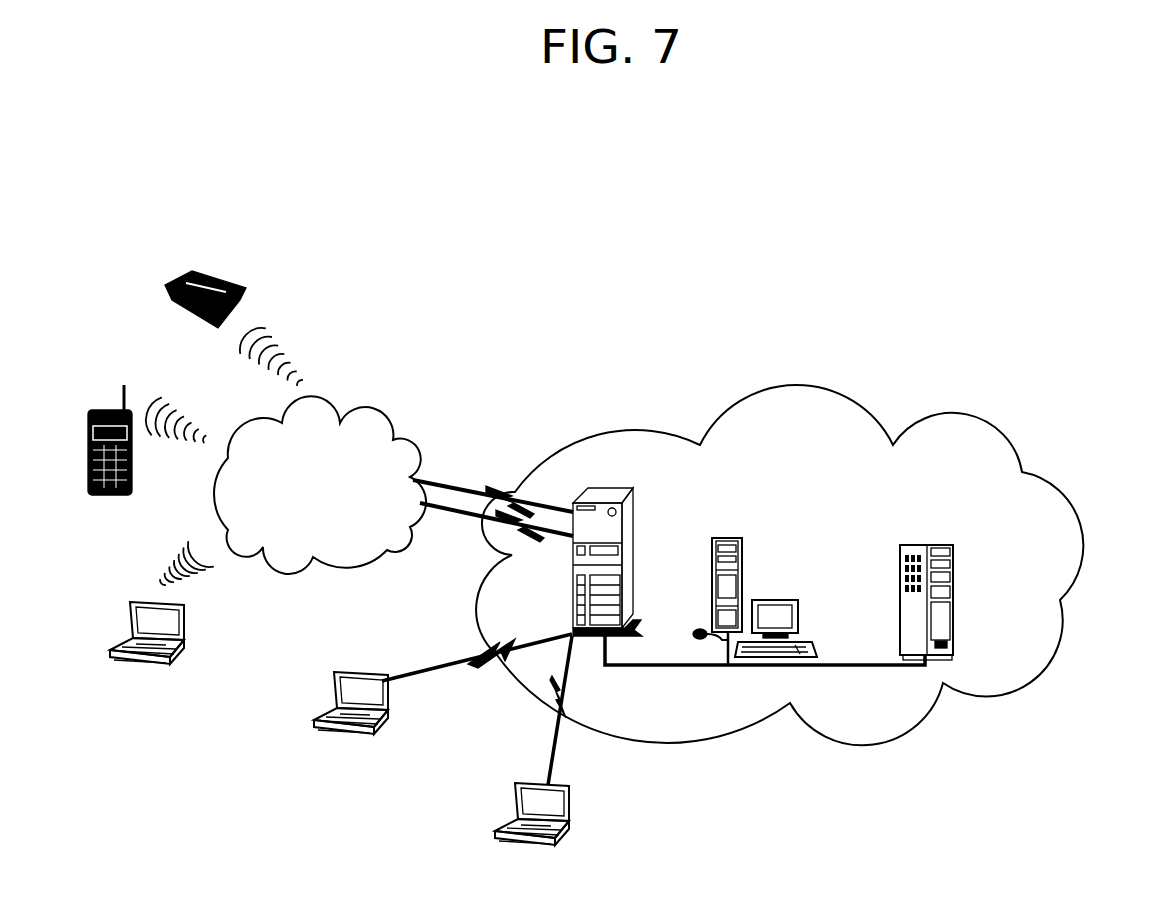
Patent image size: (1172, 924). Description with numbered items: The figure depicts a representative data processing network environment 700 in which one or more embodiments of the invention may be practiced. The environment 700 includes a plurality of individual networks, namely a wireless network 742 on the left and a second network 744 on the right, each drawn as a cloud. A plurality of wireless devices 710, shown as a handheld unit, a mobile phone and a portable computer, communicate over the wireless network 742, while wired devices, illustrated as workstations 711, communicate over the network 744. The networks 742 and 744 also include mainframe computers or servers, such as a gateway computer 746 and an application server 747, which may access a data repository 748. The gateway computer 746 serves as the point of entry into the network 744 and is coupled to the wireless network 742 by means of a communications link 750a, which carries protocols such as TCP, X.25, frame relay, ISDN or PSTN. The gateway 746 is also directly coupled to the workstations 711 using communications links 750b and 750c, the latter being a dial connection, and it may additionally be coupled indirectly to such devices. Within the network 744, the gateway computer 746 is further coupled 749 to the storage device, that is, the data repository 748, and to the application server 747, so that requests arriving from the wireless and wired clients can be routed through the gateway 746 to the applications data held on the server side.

The data processing network environment 700 is at (603, 204).
The wireless devices 710 is at (190, 506).
The workstations 711 is at (438, 784).
The wireless network 742 is at (320, 475).
The network 744 is at (779, 556).
The gateway computer 746 is at (641, 544).
The application server 747 is at (755, 584).
The data repository 748 is at (955, 602).
The coupling 749 is at (765, 669).
The communications link 750a is at (491, 476).
The communications link 750b is at (477, 653).
The communications link 750c is at (523, 710).